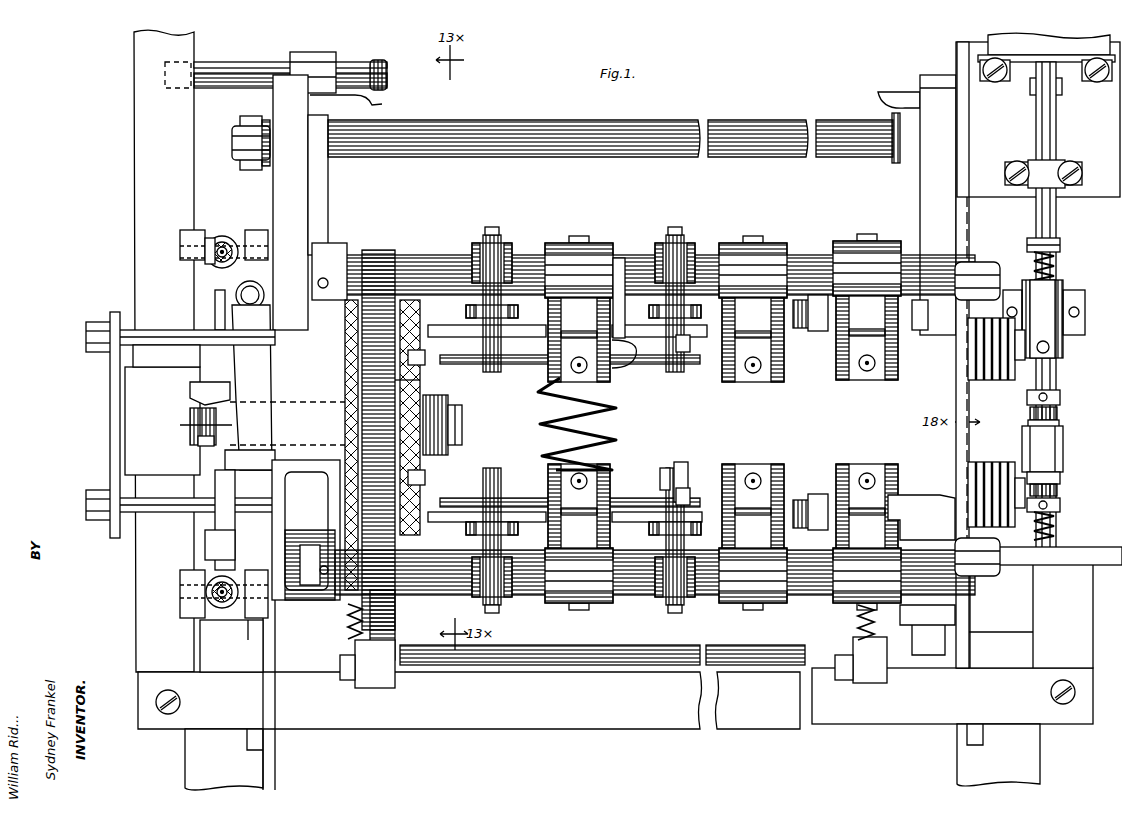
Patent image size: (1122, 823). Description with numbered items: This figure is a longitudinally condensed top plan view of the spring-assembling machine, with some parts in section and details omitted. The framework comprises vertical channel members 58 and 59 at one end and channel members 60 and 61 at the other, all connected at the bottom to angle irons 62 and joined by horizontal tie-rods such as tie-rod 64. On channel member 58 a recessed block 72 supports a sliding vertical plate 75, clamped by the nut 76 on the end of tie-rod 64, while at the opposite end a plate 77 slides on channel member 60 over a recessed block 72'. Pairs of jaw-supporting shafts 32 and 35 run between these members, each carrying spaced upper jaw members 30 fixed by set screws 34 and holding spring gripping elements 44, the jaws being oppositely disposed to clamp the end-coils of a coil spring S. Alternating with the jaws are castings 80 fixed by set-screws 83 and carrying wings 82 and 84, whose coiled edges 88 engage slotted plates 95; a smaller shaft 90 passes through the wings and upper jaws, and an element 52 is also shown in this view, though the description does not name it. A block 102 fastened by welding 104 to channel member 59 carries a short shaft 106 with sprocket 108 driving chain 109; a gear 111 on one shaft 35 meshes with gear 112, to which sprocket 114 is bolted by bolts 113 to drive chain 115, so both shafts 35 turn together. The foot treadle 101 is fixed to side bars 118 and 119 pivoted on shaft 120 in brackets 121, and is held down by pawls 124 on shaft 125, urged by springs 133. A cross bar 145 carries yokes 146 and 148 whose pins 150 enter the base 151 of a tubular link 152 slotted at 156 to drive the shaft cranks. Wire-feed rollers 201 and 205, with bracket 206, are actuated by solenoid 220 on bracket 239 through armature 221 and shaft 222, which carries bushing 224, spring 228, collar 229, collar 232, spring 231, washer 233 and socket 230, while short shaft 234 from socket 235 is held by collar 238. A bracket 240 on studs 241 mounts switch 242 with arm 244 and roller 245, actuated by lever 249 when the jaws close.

The side bar 118 is at (136, 134).
The foot treadle 101 is at (512, 722).
The angle iron 62 is at (190, 755).
The side bar 119 is at (1085, 642).
The shaft 120 is at (240, 62).
The bracket 121 is at (316, 54).
The vertical channel member 58 is at (346, 104).
The vertical plate 75 is at (305, 190).
The recessed block 72 is at (331, 185).
The nut 76 is at (250, 170).
The tie-rod 64 is at (632, 124).
The vertical channel member 60 is at (880, 100).
The plate 77 is at (932, 170).
The recessed block 72' is at (915, 355).
The bracket 239 is at (986, 192).
The solenoid 220 is at (1076, 35).
The armature 221 is at (1055, 72).
The shaft 222 is at (1055, 133).
The fixed collar 229 is at (1060, 243).
The spring 228 is at (1056, 262).
The bushing 224 is at (1060, 288).
The collar 232 is at (1062, 398).
The spring 231 is at (1058, 414).
The washer 233 is at (1030, 420).
The socket 230 is at (1066, 436).
The socket 235 is at (1062, 460).
The short shaft 234 is at (1058, 490).
The collar 238 is at (1061, 506).
The bracket 206 is at (1085, 548).
The driving roller 201 is at (995, 382).
The roller 205 is at (1018, 360).
The yoke 148 is at (182, 232).
The base of tubular link 151 is at (244, 238).
The tubular link 152 is at (222, 236).
The pin 150 is at (182, 250).
The slot 156 is at (200, 268).
The block 102 is at (287, 387).
The welding 104 is at (290, 460).
The stud 241 is at (86, 340).
The bracket 240 is at (110, 410).
The switch 242 is at (132, 433).
The lever 249 is at (190, 389).
The actuating arm 244 is at (190, 436).
The roller 245 is at (198, 446).
The vertical channel member 59 is at (275, 482).
The chain 109 is at (345, 492).
The cross bar 145 is at (220, 526).
The yoke 146 is at (208, 572).
The upper supporting shaft 32 is at (440, 262).
The rail 52 is at (526, 352).
The sprocket 108 is at (348, 262).
The gear 112 is at (378, 278).
The rotatable shaft 35 is at (422, 530).
The gear 111 is at (368, 616).
The bolt 113 is at (426, 358).
The sprocket 114 is at (405, 392).
The chain 115 is at (426, 472).
The short shaft 106 is at (462, 423).
The upper jaw member 30 is at (600, 250).
The set screw 34 is at (580, 236).
The plate 95 is at (636, 268).
The coiled lower rear edge 88 is at (636, 352).
The set-screw 83 is at (490, 236).
The casting 80 is at (506, 244).
The wing 84 is at (664, 470).
The wing 82 is at (684, 476).
The shaft 90 is at (690, 352).
The spring gripping element 44 is at (798, 356).
The vertical channel member 61 is at (920, 490).
The coil spring S is at (577, 424).
The shaft 125 is at (646, 650).
The pawl 124 is at (372, 690).
The spring 133 is at (350, 648).